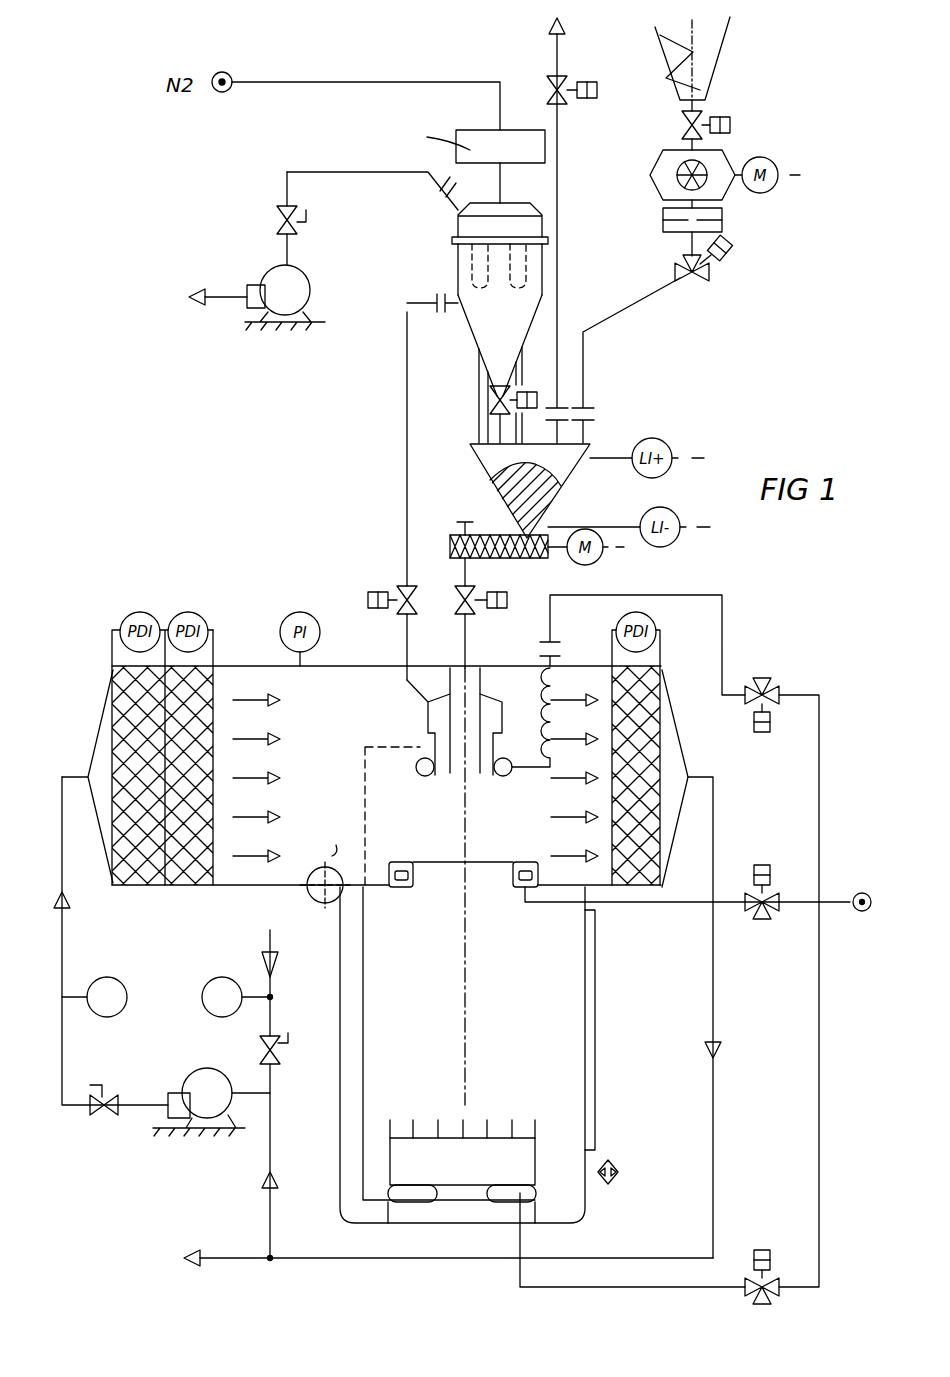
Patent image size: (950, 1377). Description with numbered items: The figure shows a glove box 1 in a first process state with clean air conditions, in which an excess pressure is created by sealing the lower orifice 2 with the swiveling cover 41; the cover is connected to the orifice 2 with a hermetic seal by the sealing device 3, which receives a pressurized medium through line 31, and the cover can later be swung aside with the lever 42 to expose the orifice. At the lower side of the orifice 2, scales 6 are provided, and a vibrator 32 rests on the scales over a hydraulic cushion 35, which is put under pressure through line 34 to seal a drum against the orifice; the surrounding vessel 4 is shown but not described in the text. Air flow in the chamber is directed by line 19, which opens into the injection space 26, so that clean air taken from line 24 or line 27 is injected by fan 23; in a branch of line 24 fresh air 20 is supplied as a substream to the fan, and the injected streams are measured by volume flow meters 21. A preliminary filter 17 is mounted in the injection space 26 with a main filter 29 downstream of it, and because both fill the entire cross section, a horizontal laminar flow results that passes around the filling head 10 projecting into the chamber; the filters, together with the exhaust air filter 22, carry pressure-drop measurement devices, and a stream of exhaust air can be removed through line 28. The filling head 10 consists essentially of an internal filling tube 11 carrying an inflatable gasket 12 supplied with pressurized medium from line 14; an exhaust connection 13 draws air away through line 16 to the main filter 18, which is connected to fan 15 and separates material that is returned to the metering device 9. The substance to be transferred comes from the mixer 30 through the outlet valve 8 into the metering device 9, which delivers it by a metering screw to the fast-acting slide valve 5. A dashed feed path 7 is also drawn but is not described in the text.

The glove box 1 is at (240, 690).
The lower orifice 2 is at (433, 877).
The sealing device 3 is at (400, 888).
The vessel 4 is at (586, 1198).
The fast-acting slide valve 5 is at (472, 596).
The scales 6 is at (420, 1212).
The feed line 7 is at (352, 756).
The outlet valve 8 is at (712, 279).
The metering device 9 is at (488, 456).
The filling head 10 is at (418, 714).
The internal filling tube 11 is at (456, 770).
The inflatable gasket 12 is at (416, 775).
The exhaust connection 13 is at (487, 710).
The line 14 is at (552, 680).
The fan 15 is at (300, 272).
The line 16 is at (402, 588).
The preliminary filter 17 is at (137, 708).
The main filter 18 is at (462, 256).
The line 19 is at (62, 1067).
The fresh air 20 is at (275, 990).
The volume flow meters 21 is at (212, 987).
The exhaust air filter 22 is at (664, 688).
The fan 23 is at (182, 1120).
The line 24 is at (272, 1150).
The injection space 26 is at (108, 748).
The line 27 is at (715, 1012).
The line 28 is at (248, 1255).
The main filter 29 is at (175, 690).
The mixer 30 is at (738, 32).
The line 31 is at (660, 920).
The vibrator 32 is at (495, 1152).
The line 34 is at (818, 1140).
The hydraulic cushion 35 is at (505, 1192).
The swiveling cover 41 is at (500, 860).
The lever 42 is at (325, 905).